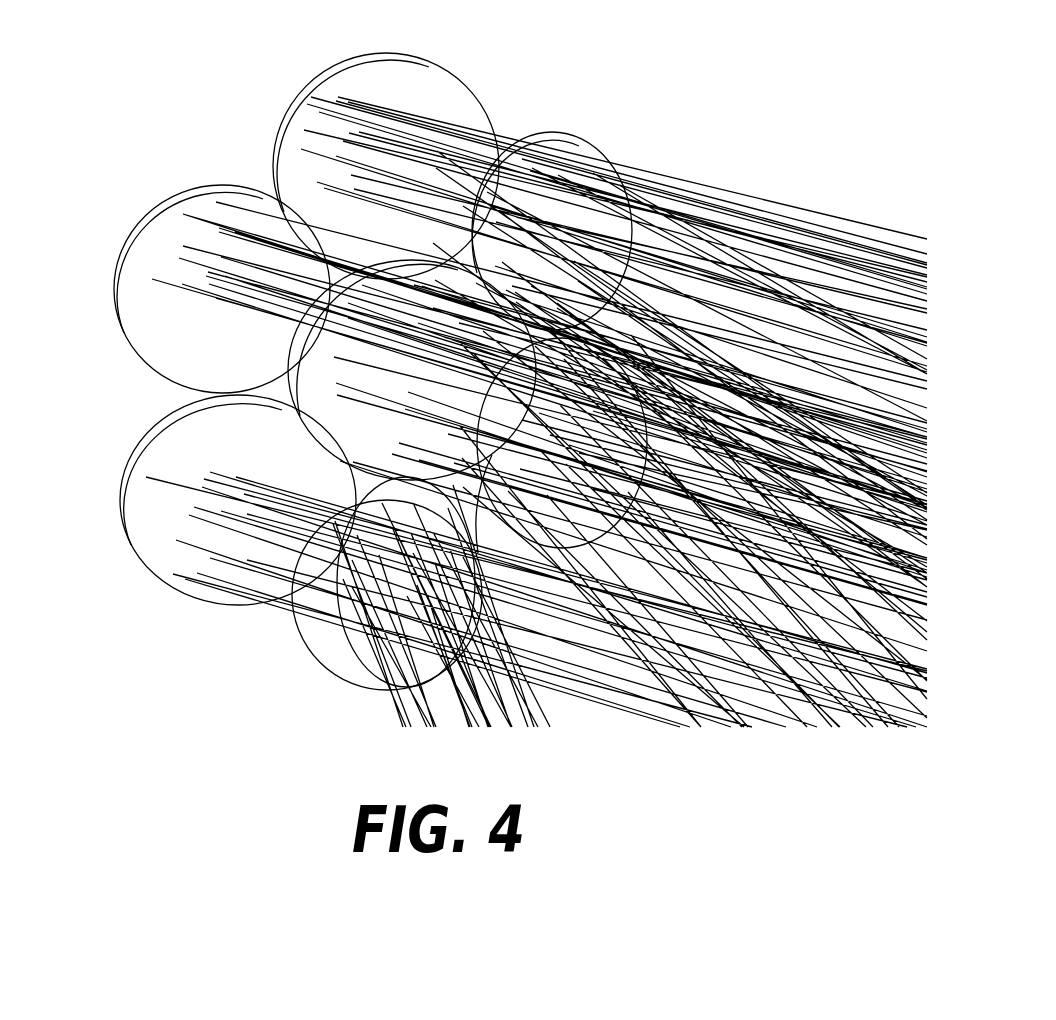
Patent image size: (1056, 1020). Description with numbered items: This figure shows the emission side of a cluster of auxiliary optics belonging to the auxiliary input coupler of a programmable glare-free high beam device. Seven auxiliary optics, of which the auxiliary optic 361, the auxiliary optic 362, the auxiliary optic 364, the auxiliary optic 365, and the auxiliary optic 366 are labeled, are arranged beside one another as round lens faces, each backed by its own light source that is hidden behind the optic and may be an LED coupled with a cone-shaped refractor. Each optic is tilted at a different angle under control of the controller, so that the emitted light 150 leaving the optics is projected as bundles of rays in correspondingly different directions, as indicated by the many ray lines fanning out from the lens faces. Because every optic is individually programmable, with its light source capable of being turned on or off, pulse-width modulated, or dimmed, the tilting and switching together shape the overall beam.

The emitted light 150 is at (787, 116).
The auxiliary optic 361 is at (412, 80).
The auxiliary optic 362 is at (597, 152).
The auxiliary optic 364 is at (332, 638).
The auxiliary optic 365 is at (203, 582).
The auxiliary optic 366 is at (195, 210).